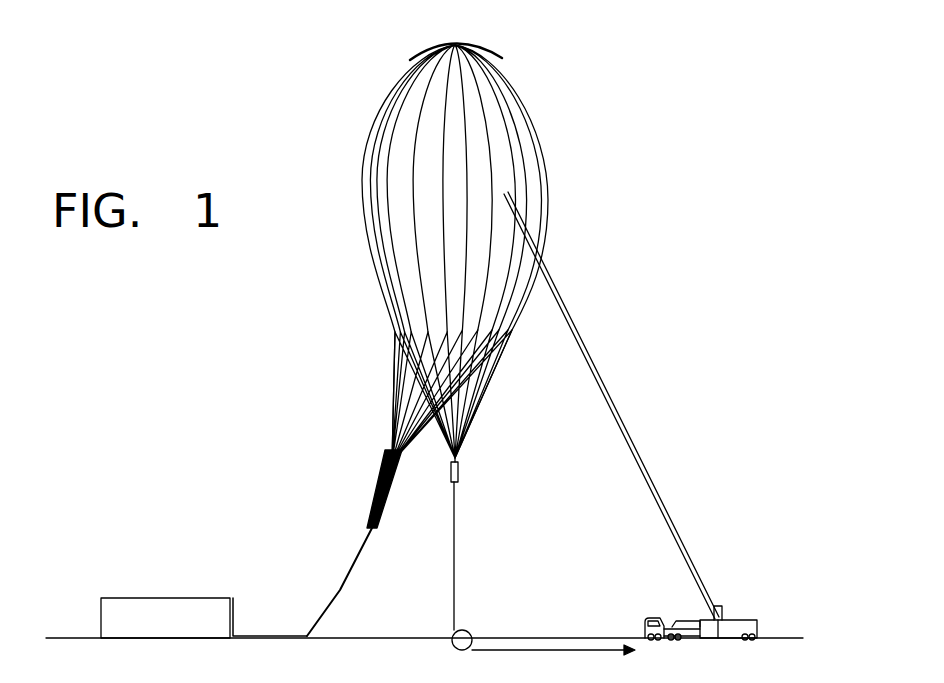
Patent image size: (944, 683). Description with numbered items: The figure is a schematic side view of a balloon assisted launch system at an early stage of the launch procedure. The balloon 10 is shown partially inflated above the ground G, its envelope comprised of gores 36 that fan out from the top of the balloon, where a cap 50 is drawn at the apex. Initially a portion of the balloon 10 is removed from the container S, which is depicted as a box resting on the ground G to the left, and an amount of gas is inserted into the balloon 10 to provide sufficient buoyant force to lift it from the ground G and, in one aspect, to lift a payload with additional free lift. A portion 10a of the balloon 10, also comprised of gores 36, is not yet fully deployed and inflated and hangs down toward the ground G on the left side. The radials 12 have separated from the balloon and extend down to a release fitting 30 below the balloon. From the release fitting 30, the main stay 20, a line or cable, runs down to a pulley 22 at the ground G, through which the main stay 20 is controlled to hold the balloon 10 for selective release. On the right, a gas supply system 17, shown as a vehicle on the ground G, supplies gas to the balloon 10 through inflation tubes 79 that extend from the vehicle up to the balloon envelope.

The balloon 10 is at (548, 232).
The portion of the balloon 10a is at (383, 478).
The radials 12 is at (487, 400).
The gas supply system 17 is at (730, 620).
The main stay 20 is at (454, 555).
The pulley 22 is at (464, 630).
The release fitting 30 is at (458, 475).
The gores 36 is at (383, 97).
The top cap / apex fitting 50 is at (492, 52).
The inflation tubes 79 is at (618, 398).
The container S is at (162, 598).
The ground G is at (420, 637).